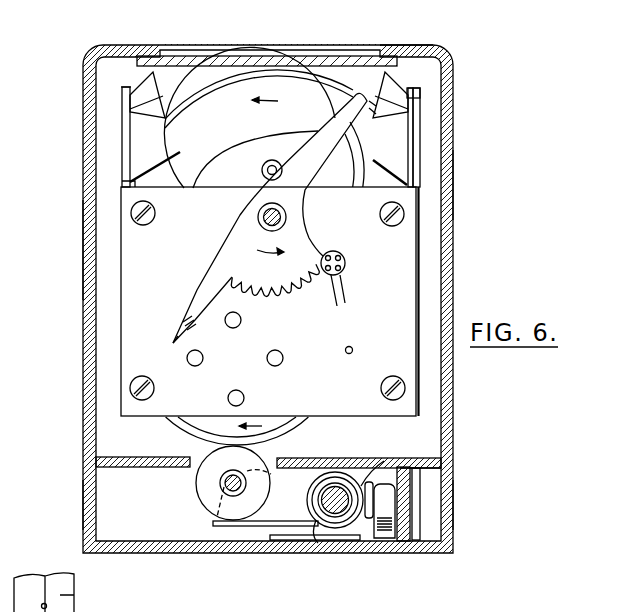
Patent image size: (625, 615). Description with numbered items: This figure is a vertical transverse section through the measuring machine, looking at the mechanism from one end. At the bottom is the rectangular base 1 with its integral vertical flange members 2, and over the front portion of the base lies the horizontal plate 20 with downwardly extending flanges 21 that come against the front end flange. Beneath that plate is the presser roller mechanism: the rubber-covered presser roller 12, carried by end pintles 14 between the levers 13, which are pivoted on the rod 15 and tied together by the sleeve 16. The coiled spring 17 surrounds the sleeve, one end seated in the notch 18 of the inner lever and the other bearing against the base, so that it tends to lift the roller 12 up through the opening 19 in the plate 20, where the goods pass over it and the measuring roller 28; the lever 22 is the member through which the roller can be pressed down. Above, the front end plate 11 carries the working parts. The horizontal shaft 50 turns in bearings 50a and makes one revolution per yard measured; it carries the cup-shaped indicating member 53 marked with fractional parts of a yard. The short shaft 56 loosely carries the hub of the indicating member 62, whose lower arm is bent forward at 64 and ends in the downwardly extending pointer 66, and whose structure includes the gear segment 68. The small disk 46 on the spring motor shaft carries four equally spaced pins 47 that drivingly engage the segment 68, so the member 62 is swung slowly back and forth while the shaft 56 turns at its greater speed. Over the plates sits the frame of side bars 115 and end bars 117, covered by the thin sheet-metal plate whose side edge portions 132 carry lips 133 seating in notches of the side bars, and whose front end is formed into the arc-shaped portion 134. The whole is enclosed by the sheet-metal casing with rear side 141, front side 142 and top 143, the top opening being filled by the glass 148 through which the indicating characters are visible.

The base 1 is at (258, 550).
The vertical flange members 2 is at (406, 505).
The front end plate 11 is at (408, 289).
The presser roller 12 is at (205, 493).
The levers 13 is at (293, 515).
The end pintles 14 is at (231, 491).
The rod 15 is at (342, 513).
The sleeve 16 is at (350, 511).
The coiled spring 17 is at (322, 524).
The notch 18 is at (412, 457).
The opening 19 is at (197, 460).
The plate 20 is at (372, 460).
The flanges 21 is at (93, 505).
The lever 22 is at (390, 535).
The roller 28 is at (290, 420).
The small disk 46 is at (346, 263).
The pins 47 is at (343, 258).
The horizontal shaft 50 is at (252, 180).
The bearings 50a is at (262, 172).
The cup-shaped indicating member 53 is at (352, 149).
The short shaft 56 is at (258, 220).
The indicating member 62 is at (306, 192).
The forward bent portion 64 is at (192, 324).
The pointer 66 is at (176, 348).
The gear segment 68 is at (296, 284).
The side bars 115 is at (127, 150).
The end bars 117 is at (387, 125).
The side edge portions 132 is at (138, 82).
The lips 133 is at (121, 98).
The arc-shaped portion 134 is at (263, 72).
The rear side 141 is at (449, 178).
The front side 142 is at (92, 252).
The top 143 is at (404, 47).
The glass 148 is at (344, 57).